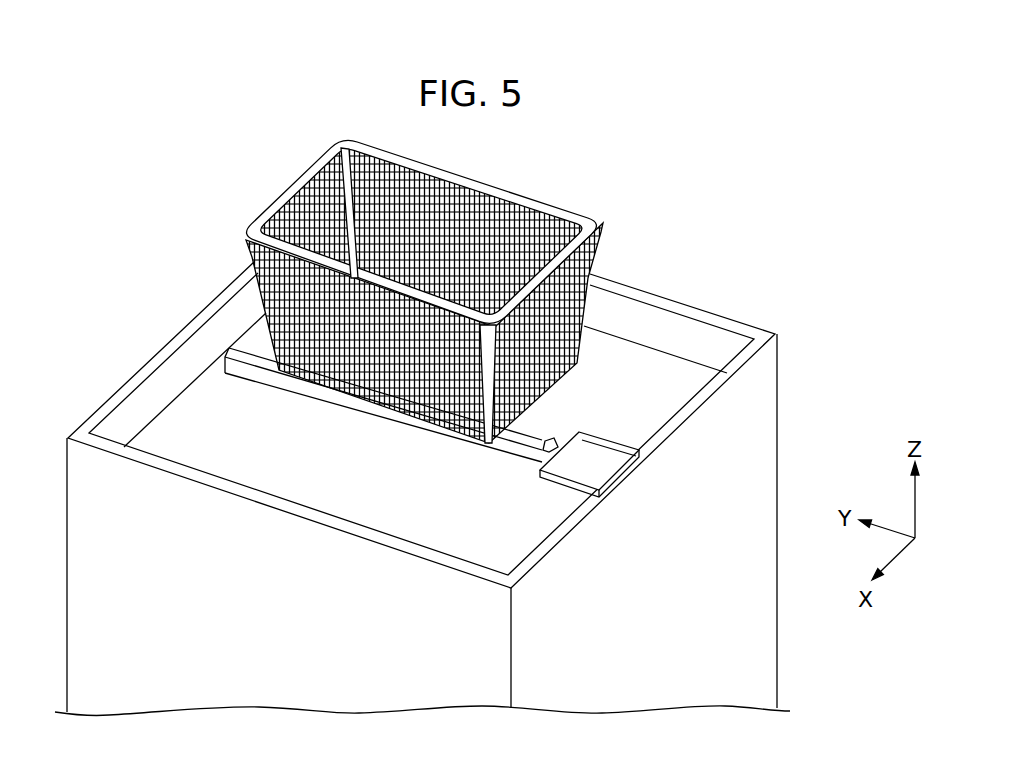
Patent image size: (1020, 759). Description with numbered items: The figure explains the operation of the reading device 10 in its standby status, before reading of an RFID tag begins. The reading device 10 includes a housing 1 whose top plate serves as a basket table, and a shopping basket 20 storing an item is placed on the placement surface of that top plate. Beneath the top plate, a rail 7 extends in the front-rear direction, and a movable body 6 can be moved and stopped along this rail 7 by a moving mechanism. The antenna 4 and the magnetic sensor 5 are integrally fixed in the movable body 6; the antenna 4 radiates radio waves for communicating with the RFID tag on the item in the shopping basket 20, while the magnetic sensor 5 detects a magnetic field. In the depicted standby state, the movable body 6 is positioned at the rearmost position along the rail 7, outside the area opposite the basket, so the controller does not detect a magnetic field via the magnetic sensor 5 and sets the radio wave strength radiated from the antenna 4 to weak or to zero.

The housing 1 is at (766, 428).
The reading device 10 is at (719, 281).
The shopping basket 20 is at (600, 222).
The rail 7 is at (237, 372).
The antenna 4 is at (583, 462).
The magnetic sensor 5 is at (540, 456).
The movable body 6 is at (609, 499).